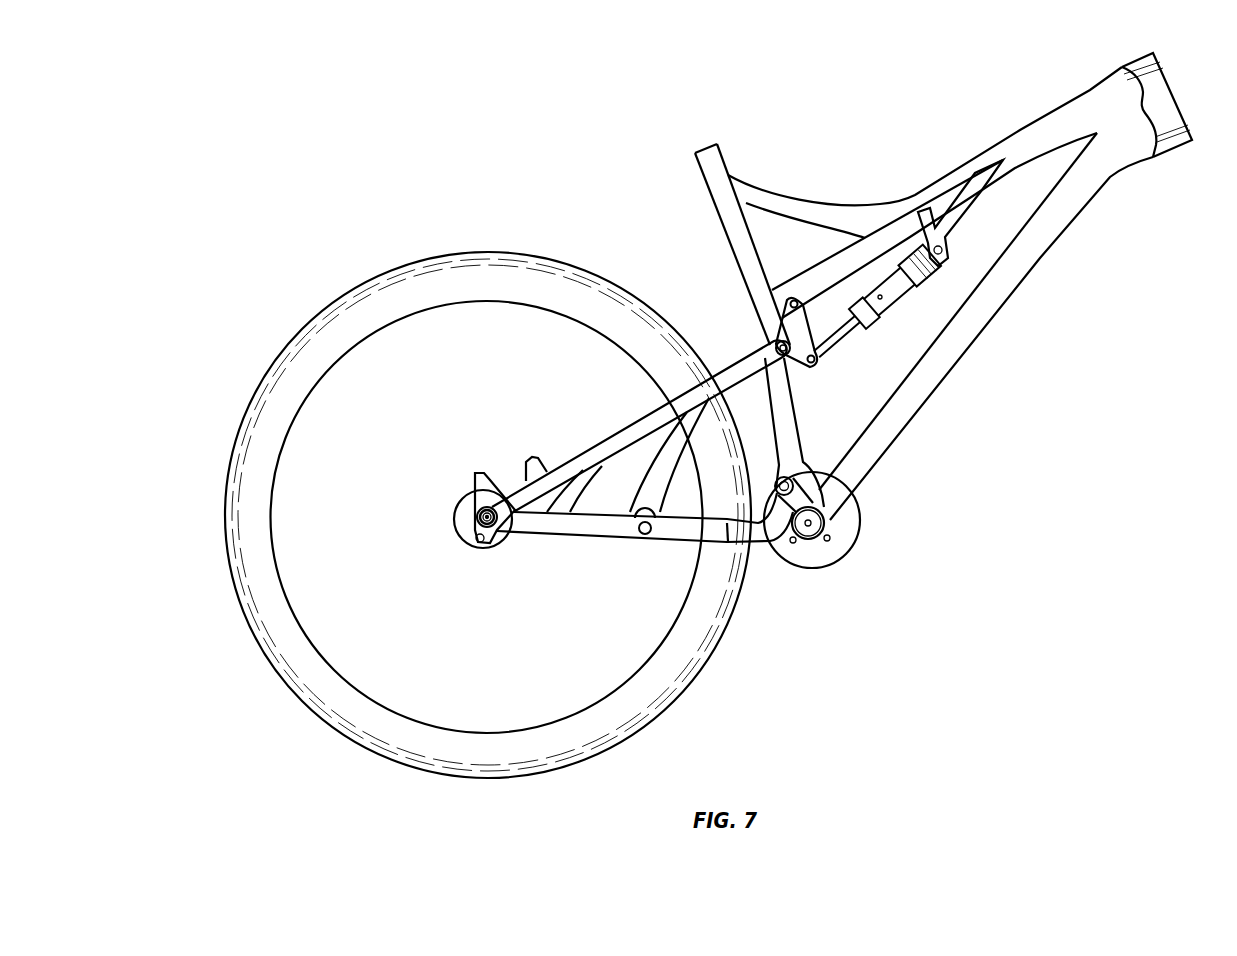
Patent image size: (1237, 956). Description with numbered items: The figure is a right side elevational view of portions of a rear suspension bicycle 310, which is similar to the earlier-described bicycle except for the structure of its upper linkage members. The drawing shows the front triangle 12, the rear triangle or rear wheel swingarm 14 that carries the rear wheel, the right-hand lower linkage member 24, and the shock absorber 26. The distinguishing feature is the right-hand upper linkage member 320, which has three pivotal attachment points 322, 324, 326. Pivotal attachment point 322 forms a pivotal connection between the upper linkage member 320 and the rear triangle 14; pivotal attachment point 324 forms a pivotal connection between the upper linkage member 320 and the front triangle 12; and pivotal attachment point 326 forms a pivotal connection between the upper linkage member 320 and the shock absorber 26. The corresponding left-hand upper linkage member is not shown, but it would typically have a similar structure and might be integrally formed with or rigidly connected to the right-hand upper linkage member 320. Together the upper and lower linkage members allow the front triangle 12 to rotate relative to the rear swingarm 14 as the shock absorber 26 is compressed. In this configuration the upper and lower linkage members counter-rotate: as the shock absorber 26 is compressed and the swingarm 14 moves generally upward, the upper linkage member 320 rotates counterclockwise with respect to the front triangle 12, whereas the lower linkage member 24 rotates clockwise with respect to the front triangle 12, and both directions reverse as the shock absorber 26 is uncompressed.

The bicycle 310 is at (603, 133).
The front triangle 12 is at (1003, 403).
The rear triangle or rear wheel swingarm 14 is at (588, 565).
The right-hand lower linkage member 24 is at (681, 546).
The shock absorber 26 is at (908, 292).
The right-hand upper linkage member 320 is at (822, 346).
The pivotal attachment point 322 is at (770, 340).
The pivotal attachment point 324 is at (794, 298).
The pivotal attachment point 326 is at (816, 370).